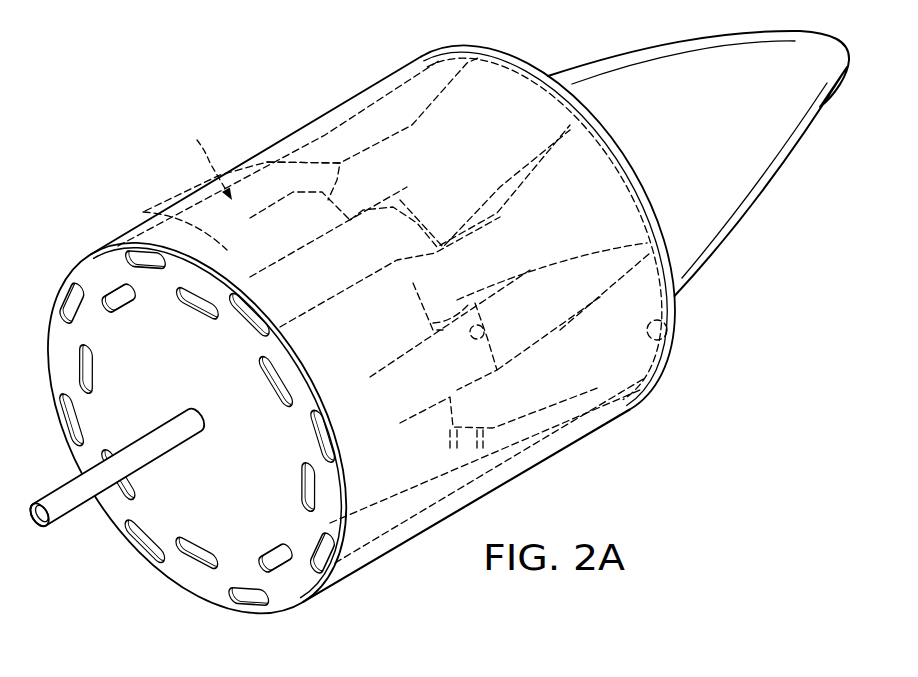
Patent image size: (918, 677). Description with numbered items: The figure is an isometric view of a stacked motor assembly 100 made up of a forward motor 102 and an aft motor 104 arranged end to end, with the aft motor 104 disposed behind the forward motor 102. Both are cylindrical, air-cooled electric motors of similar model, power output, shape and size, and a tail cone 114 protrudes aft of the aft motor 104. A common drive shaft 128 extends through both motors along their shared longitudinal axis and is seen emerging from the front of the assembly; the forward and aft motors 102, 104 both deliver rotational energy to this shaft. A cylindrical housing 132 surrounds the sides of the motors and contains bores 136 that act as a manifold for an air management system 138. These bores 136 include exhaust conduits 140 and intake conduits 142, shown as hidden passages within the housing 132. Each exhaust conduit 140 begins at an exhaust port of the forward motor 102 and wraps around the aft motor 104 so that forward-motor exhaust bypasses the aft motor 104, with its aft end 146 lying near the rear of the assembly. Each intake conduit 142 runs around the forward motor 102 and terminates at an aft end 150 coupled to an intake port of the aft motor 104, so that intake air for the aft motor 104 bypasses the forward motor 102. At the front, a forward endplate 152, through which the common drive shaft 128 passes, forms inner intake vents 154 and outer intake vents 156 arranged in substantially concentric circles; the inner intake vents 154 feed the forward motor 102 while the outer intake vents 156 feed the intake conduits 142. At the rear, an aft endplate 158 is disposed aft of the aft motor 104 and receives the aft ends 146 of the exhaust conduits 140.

The stacked motor assembly 100 is at (255, 72).
The forward motor 102 is at (178, 213).
The aft motor 104 is at (563, 280).
The tail cone 114 is at (772, 200).
The common drive shaft 128 is at (73, 512).
The cylindrical housing 132 is at (357, 572).
The bores 136 is at (390, 78).
The air management system 138 is at (206, 155).
The exhaust conduits 140 is at (636, 185).
The intake conduits 142 is at (400, 513).
The aft ends of exhaust conduits 146 is at (670, 340).
The aft end of intake conduit 150 is at (487, 333).
The forward endplate 152 is at (80, 262).
The inner intake vents 154 is at (193, 550).
The outer intake vents 156 is at (247, 593).
The aft endplate 158 is at (613, 137).